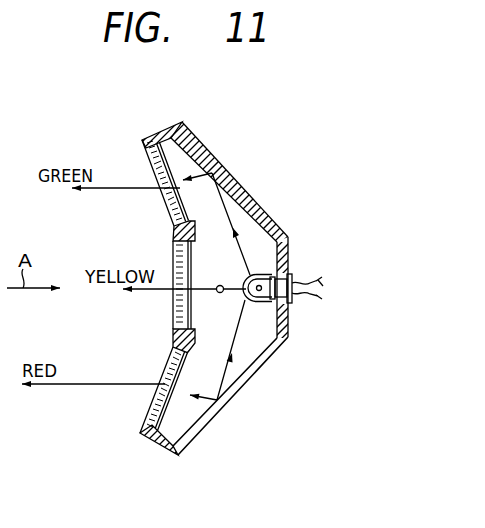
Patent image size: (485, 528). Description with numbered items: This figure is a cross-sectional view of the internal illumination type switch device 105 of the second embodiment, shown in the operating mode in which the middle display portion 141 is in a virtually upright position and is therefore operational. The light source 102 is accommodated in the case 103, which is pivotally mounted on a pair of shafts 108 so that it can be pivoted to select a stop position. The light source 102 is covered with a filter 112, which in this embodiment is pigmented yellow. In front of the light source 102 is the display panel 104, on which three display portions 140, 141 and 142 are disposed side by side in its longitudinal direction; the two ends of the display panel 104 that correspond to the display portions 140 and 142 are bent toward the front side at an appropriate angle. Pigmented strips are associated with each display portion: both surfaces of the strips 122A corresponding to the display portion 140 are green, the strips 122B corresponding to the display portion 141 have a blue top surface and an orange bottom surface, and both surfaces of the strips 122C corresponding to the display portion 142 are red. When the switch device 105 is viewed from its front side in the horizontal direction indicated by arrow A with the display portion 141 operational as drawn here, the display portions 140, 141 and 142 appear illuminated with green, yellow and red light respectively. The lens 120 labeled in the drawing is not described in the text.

The light source 102 is at (264, 270).
The case 103 is at (283, 328).
The display panel 104 is at (170, 150).
The switch device 105 is at (272, 183).
The shaft 108 is at (220, 294).
The filter 112 is at (270, 245).
The lens 120 is at (142, 158).
The strips 122A is at (166, 200).
The strips 122B is at (173, 306).
The strips 122C is at (148, 403).
The display portion 140 is at (170, 170).
The display portion 141 is at (191, 286).
The display portion 142 is at (168, 402).